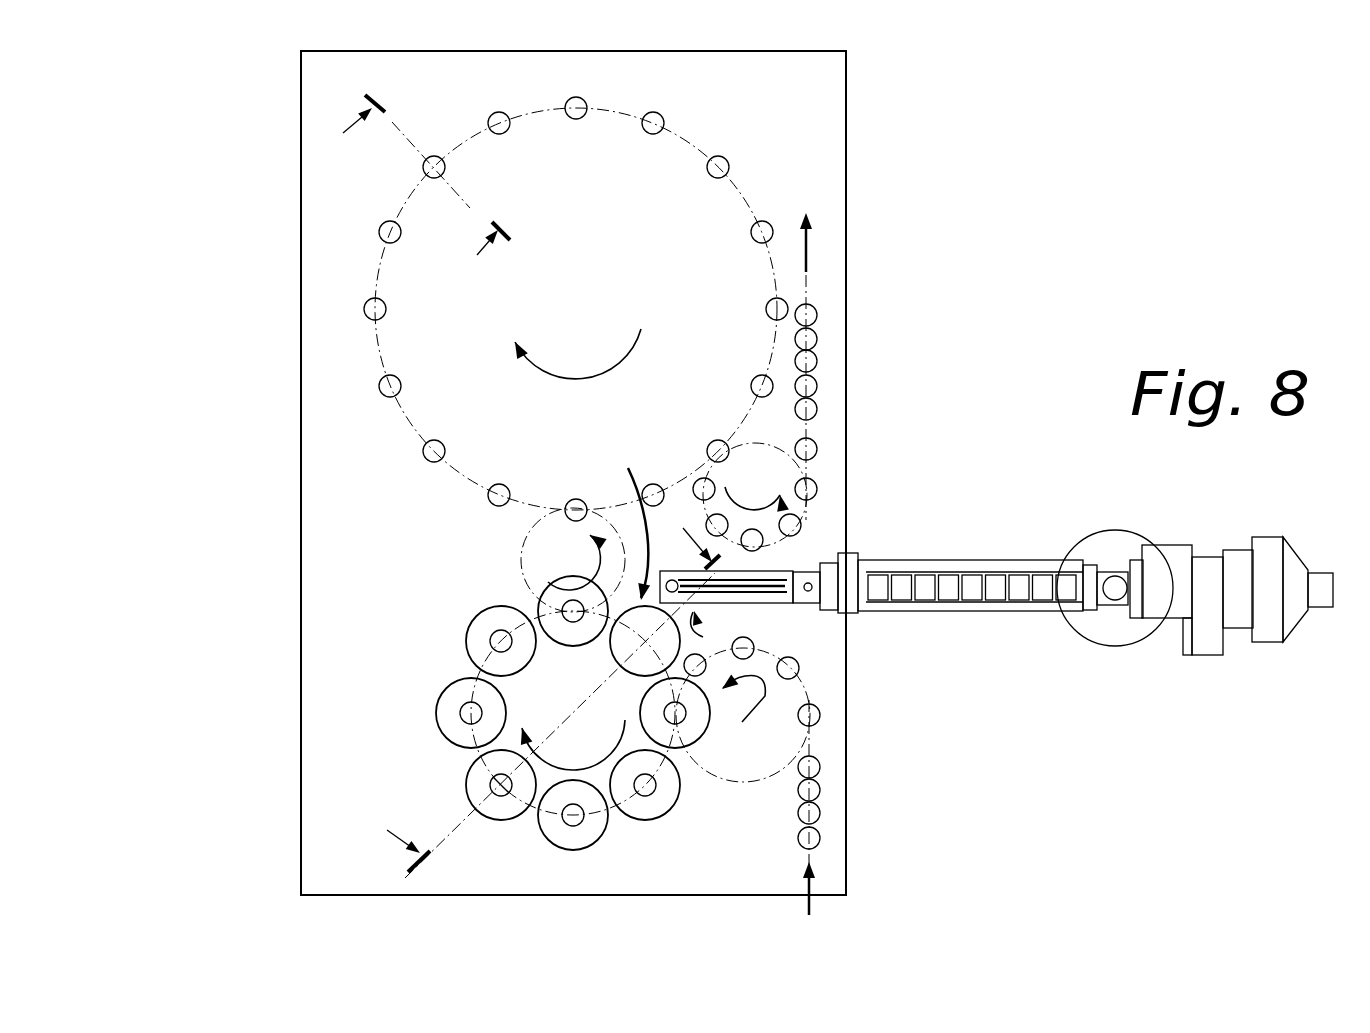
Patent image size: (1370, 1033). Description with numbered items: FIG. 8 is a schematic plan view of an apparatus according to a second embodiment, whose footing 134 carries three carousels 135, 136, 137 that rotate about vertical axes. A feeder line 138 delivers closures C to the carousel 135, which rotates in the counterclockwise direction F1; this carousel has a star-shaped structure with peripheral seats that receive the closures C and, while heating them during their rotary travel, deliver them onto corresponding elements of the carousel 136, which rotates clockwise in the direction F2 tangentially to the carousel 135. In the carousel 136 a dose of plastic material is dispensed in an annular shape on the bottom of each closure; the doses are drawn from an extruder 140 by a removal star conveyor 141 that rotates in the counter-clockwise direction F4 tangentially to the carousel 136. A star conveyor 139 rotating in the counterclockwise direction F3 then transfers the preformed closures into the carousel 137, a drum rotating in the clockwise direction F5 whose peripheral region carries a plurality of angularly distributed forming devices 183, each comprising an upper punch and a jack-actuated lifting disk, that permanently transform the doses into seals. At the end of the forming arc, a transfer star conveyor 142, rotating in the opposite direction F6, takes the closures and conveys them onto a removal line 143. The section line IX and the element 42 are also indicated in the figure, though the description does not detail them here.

The container holder 42 is at (452, 685).
The footing 134 is at (285, 827).
The carousel 135 is at (742, 792).
The carousel 136 is at (525, 812).
The carousel 137 is at (437, 475).
The line 138 is at (840, 810).
The star conveyor 139 is at (516, 532).
The extruder 140 is at (974, 545).
The removal star conveyor 141 is at (630, 511).
The transfer star conveyor 142 is at (826, 510).
The removal line 143 is at (812, 376).
The forming devices 183 is at (588, 103).
The counterclockwise direction F1 is at (743, 722).
The clockwise direction F2 is at (577, 732).
The counterclockwise direction F3 is at (523, 558).
The counter-clockwise direction F4 is at (705, 620).
The clockwise direction F5 is at (555, 375).
The opposite direction F6 is at (740, 494).
The closures C is at (825, 790).
The section line IX is at (680, 494).